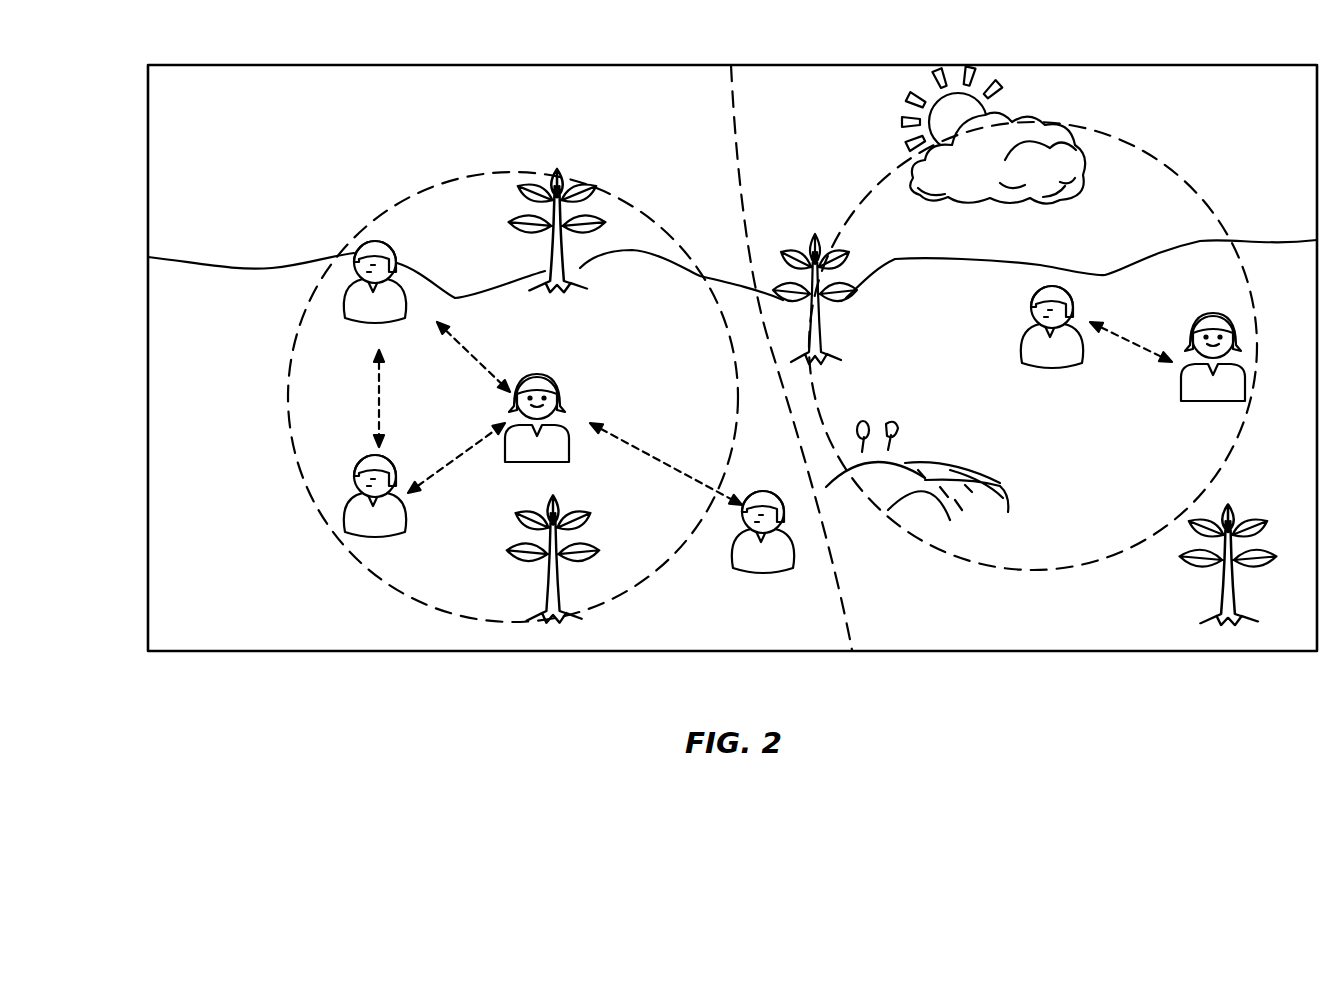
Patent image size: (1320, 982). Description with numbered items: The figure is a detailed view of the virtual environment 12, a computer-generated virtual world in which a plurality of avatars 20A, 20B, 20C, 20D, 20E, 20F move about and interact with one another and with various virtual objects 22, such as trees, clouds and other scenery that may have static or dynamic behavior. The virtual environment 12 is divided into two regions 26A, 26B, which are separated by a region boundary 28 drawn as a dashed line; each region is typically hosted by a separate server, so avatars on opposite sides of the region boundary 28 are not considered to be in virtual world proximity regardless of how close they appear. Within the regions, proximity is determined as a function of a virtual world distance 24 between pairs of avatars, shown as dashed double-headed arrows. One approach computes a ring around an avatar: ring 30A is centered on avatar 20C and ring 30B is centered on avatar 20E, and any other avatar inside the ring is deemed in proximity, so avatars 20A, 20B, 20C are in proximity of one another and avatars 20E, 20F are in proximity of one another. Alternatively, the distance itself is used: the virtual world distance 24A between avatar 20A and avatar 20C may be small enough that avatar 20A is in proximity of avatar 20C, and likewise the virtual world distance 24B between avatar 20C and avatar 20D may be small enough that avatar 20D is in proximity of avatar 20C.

The virtual environment 12 is at (148, 167).
The avatar 20A is at (390, 243).
The avatar 20B is at (392, 455).
The avatar 20C is at (557, 382).
The avatar 20D is at (740, 568).
The avatar 20E is at (1032, 322).
The avatar 20F is at (1208, 316).
The virtual object 22 is at (578, 215).
The virtual world distance 24 is at (379, 395).
The virtual world distance 24A is at (475, 355).
The virtual world distance 24B is at (640, 450).
The region 26A is at (228, 132).
The region 26B is at (1276, 132).
The region boundary 28 is at (737, 144).
The ring 30A is at (303, 500).
The ring 30B is at (972, 565).